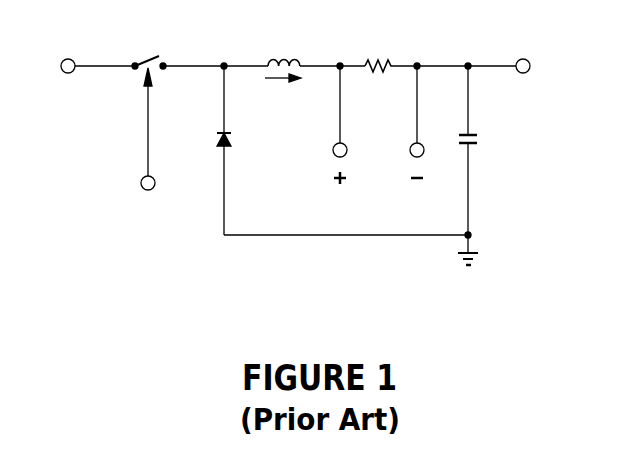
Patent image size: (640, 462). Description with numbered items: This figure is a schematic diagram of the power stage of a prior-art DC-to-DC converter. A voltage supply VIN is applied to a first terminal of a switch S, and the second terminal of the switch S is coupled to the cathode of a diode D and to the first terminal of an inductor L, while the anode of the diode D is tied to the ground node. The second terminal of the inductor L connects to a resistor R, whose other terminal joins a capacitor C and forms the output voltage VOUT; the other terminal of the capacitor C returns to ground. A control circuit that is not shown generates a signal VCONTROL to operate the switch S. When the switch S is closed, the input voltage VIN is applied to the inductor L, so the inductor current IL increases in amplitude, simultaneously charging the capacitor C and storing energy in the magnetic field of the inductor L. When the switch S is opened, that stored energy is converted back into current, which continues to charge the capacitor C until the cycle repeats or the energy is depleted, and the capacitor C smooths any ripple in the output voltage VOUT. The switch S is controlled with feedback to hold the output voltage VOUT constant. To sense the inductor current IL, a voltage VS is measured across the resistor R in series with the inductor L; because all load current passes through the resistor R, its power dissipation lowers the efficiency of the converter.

The voltage supply VIN is at (42, 64).
The switch S is at (149, 44).
The signal Vcontrol VCONTROL is at (151, 147).
The diode D is at (240, 110).
The inductor L is at (284, 47).
The inductor current IL is at (283, 92).
The resistor R is at (379, 50).
The voltage Vs VS is at (378, 125).
The capacitor C is at (485, 150).
The output voltage VOUT is at (558, 66).